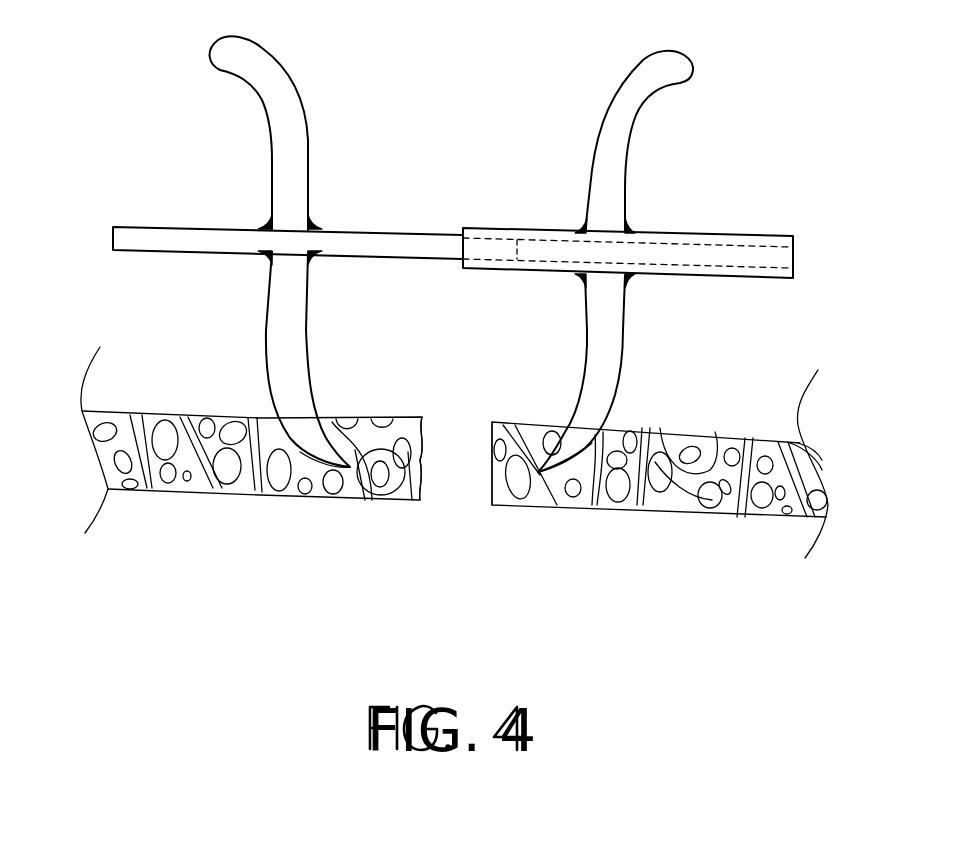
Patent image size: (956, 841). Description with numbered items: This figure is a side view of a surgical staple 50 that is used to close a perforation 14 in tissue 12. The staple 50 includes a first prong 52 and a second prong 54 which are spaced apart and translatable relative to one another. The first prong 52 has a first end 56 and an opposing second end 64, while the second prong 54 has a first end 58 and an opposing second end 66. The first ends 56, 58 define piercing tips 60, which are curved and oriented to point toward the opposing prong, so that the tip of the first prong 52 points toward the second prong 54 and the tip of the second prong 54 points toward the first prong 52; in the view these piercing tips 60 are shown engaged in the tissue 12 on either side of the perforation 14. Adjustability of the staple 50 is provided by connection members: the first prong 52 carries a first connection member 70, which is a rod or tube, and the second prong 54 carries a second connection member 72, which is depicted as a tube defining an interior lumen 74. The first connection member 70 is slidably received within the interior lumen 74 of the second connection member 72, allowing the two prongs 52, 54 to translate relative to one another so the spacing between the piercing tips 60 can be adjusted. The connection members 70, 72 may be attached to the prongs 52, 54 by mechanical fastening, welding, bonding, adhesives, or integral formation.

The staple 50 is at (138, 148).
The first prong 52 is at (298, 163).
The second prong 54 is at (600, 162).
The first end of first prong 56 is at (303, 410).
The first end of second prong 58 is at (580, 413).
The piercing tip 60 is at (332, 472).
The second end of first prong 64 is at (245, 74).
The second end of second prong 66 is at (663, 78).
The first connection member 70 is at (347, 244).
The second connection member 72 is at (528, 234).
The interior lumen 74 is at (700, 248).
The tissue 12 is at (217, 422).
The perforation 14 is at (490, 463).